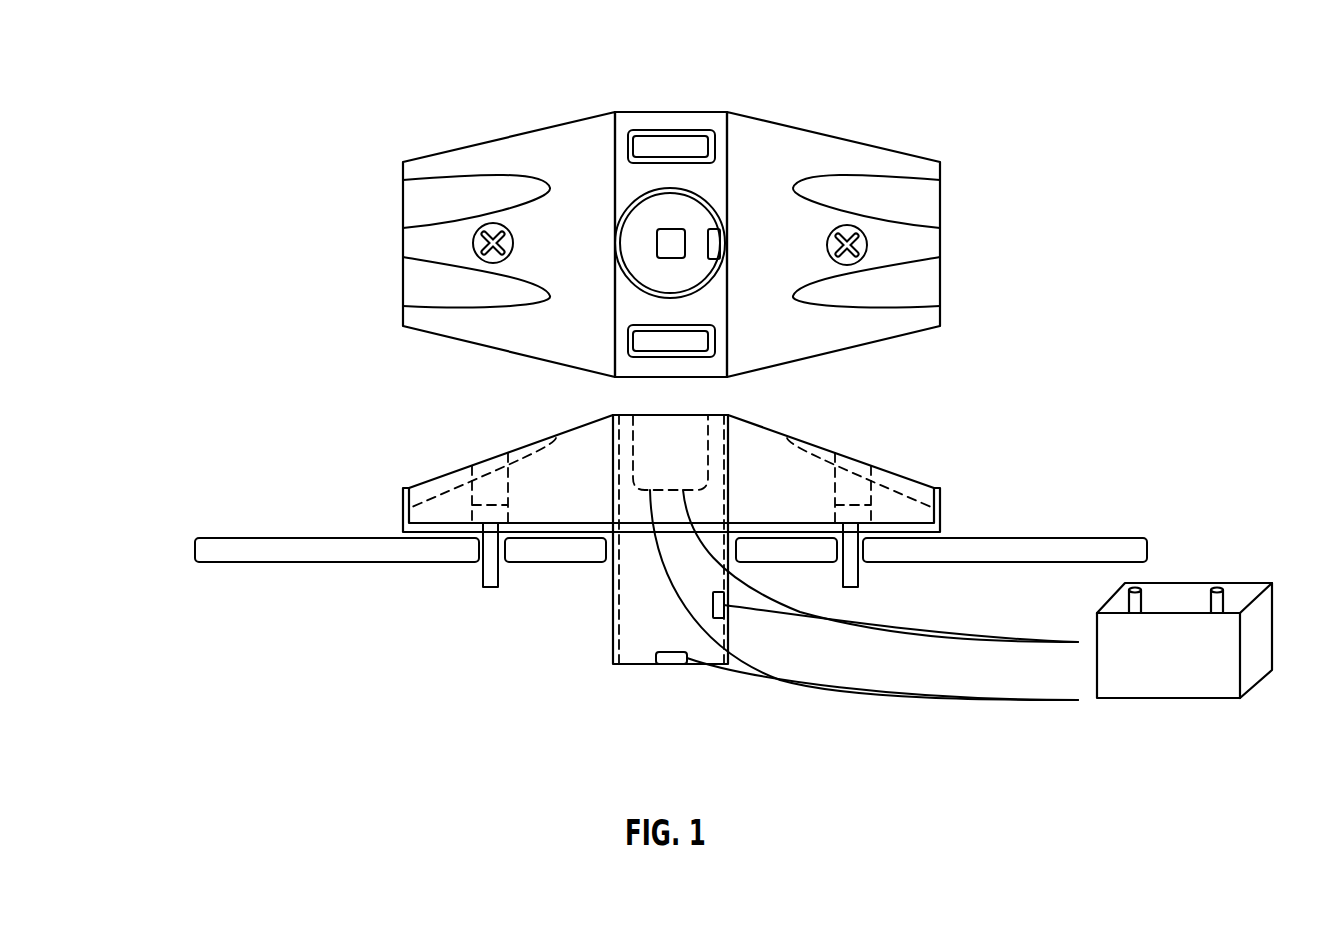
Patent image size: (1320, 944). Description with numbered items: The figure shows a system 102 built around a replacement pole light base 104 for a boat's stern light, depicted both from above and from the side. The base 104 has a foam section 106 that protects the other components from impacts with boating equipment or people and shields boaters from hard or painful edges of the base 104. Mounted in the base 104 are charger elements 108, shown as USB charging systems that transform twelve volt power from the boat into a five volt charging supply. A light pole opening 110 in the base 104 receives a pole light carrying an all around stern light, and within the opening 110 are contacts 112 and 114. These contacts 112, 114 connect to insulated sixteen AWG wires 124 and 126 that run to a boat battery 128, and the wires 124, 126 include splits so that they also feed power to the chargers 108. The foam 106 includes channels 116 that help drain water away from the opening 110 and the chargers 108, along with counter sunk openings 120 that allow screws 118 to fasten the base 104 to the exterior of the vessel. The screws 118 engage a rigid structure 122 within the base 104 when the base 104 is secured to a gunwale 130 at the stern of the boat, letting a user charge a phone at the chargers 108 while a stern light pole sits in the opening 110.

The system 102 is at (455, 108).
The replacement pole light base 104 is at (326, 488).
The foam section 106 is at (591, 251).
The charger elements 108 is at (663, 130).
The light pole opening 110 is at (703, 192).
The contact 112 is at (672, 258).
The contact 114 is at (716, 260).
The channels 116 is at (946, 208).
The screws 118 is at (456, 244).
The counter sunk openings 120 is at (497, 453).
The rigid structure 122 is at (948, 516).
The wire 124 is at (980, 703).
The wire 126 is at (993, 636).
The boat battery 128 is at (1190, 674).
The gunwale 130 is at (320, 572).